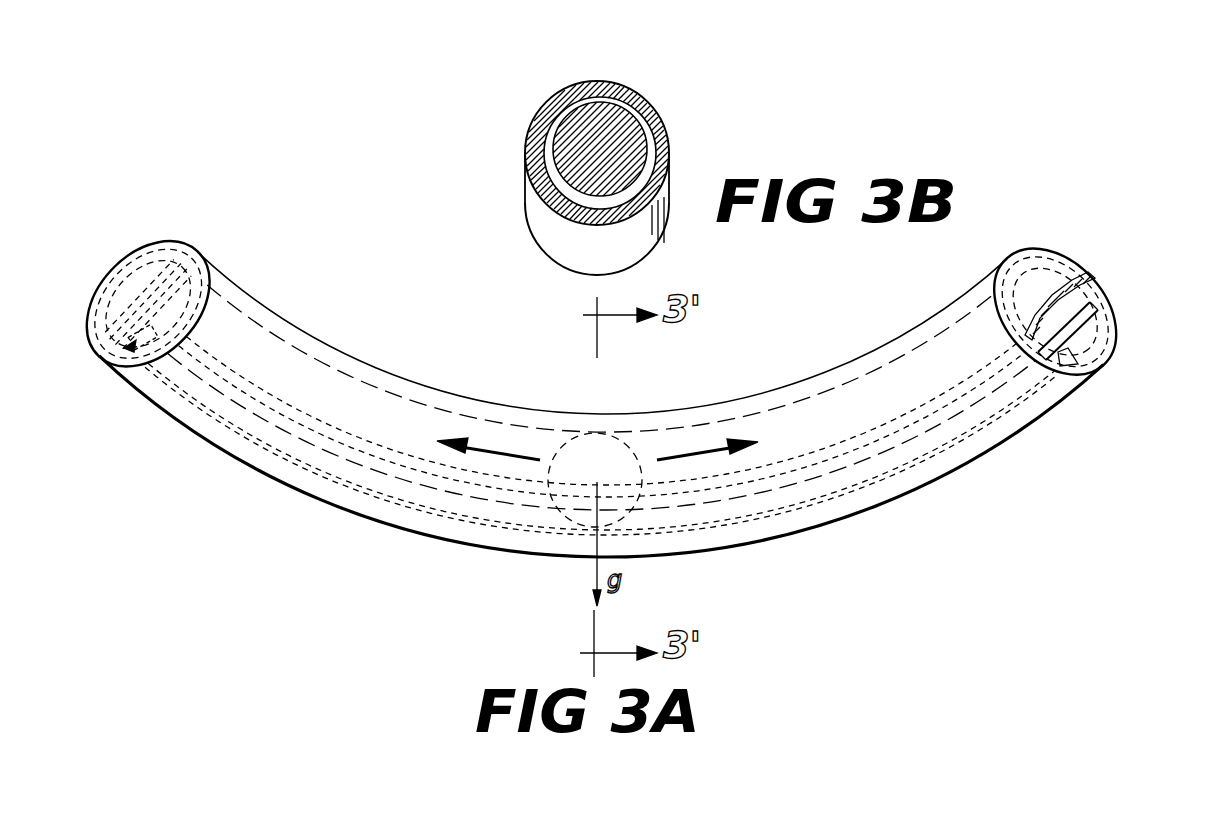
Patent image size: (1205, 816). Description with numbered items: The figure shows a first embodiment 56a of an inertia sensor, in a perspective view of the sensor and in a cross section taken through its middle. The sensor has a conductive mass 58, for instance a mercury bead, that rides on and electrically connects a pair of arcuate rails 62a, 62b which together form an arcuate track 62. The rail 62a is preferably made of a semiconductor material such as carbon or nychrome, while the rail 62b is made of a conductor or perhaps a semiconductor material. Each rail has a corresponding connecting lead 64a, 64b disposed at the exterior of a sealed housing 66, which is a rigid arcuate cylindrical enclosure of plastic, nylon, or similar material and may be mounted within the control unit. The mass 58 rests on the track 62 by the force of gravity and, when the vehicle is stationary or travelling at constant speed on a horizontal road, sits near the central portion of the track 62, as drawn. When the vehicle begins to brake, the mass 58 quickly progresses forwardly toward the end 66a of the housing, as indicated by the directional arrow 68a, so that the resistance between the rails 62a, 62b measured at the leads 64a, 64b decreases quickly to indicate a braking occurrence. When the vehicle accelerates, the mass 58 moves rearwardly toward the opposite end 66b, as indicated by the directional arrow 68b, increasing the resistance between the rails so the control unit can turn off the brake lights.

In FIG. 3A, the first embodiment of the inertia sensor 56a is at (762, 372).
In FIG. 3B, the first embodiment of the inertia sensor 56a is at (659, 78).
In FIG. 3A, the conductive mass 58 is at (602, 447).
In FIG. 3B, the conductive mass 58 is at (646, 108).
In FIG. 3A, the arcuate track 62 is at (1045, 405).
In FIG. 3A, the arcuate rail 62a is at (907, 422).
In FIG. 3A, the arcuate rail 62b is at (972, 425).
In FIG. 3A, the connecting lead 64a is at (122, 280).
In FIG. 3B, the connecting lead 64a is at (560, 198).
In FIG. 3A, the connecting lead 64b is at (128, 348).
In FIG. 3B, the connecting lead 64b is at (670, 162).
In FIG. 3A, the sealed housing 66 is at (260, 462).
In FIG. 3B, the sealed housing 66 is at (537, 133).
In FIG. 3A, the end of the housing 66a is at (175, 240).
In FIG. 3A, the end of the housing 66b is at (1100, 283).
In FIG. 3A, the directional arrow 68a is at (508, 444).
In FIG. 3A, the directional arrow 68b is at (700, 445).